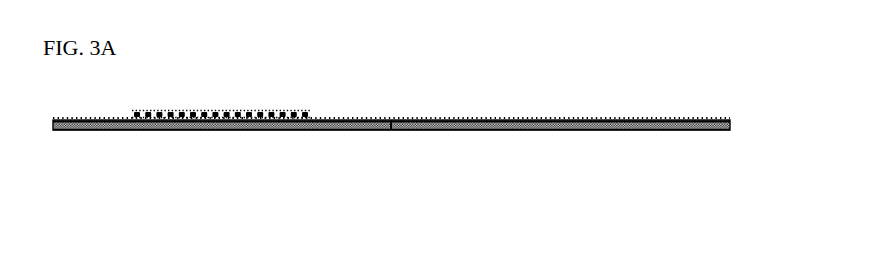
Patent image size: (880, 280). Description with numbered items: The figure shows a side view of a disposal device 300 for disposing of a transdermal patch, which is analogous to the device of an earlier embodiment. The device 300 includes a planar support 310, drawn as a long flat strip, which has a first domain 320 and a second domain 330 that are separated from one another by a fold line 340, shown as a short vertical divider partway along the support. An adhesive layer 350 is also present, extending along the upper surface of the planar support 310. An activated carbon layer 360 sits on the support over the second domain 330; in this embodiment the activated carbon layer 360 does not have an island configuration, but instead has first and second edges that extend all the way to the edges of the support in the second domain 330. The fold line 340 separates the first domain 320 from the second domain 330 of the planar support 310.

The layered substrate structure 300 is at (386, 148).
The substrate 310 is at (493, 138).
The bottom surface layer 320 is at (578, 137).
The top surface layer 330 is at (122, 142).
The boundary between regions 340 is at (387, 108).
The coating layer 350 is at (478, 107).
The nanoparticle layer 360 is at (308, 108).